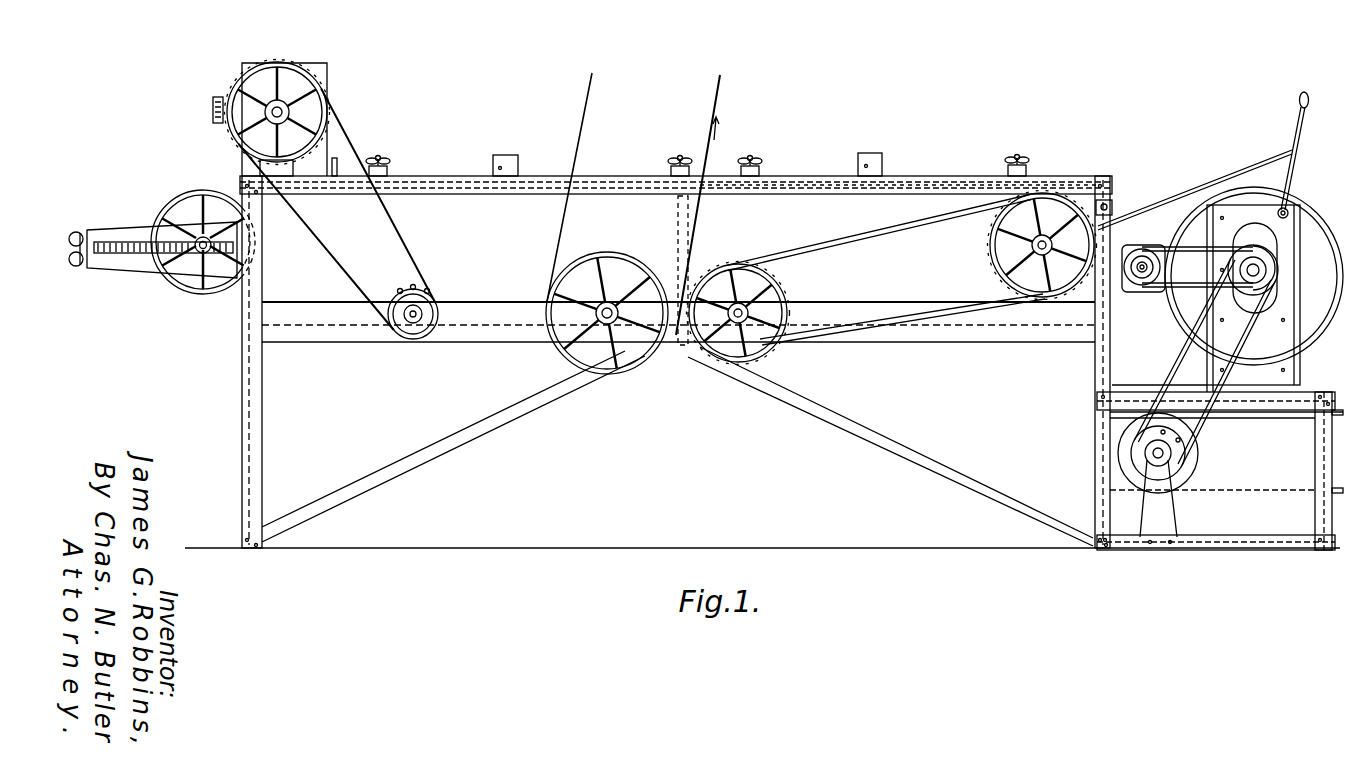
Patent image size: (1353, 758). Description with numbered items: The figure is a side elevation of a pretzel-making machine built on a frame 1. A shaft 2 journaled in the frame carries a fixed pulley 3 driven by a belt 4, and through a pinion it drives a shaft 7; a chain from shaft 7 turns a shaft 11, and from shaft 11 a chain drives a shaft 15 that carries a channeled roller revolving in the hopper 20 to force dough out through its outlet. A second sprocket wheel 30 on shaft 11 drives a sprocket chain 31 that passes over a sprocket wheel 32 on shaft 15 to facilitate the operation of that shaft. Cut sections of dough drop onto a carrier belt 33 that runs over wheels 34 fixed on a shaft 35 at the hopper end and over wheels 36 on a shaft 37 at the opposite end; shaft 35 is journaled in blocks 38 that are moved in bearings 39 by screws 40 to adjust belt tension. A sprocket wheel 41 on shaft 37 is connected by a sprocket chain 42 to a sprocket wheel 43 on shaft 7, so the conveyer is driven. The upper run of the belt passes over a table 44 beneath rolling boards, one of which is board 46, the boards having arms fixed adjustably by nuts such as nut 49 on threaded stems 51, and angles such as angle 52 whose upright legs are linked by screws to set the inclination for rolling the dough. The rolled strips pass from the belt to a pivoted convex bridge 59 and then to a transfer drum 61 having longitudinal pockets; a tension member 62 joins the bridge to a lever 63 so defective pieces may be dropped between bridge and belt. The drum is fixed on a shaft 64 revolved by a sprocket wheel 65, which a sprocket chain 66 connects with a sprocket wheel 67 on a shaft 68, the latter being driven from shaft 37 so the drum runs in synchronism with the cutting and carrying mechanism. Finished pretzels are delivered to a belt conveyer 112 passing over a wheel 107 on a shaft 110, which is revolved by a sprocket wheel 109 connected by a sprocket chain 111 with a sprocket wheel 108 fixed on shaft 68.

The frame 1 is at (262, 372).
The shaft 2 is at (592, 322).
The fixed pulley 3 is at (612, 256).
The belt 4 is at (712, 92).
The shaft 7 is at (775, 302).
The shaft 11 is at (414, 330).
The shaft 15 is at (281, 100).
The hopper 20 is at (294, 107).
The second sprocket wheel 30 is at (400, 295).
The sprocket chain 31 is at (414, 243).
The sprocket wheel 32 is at (320, 107).
The carrier belt 33 is at (494, 301).
The wheels 34 is at (203, 191).
The shaft 35 is at (205, 262).
The wheels 36 is at (1000, 250).
The shaft 37 is at (1112, 203).
The blocks 38 is at (200, 254).
The bearings 39 is at (108, 262).
The screws 40 is at (106, 240).
The sprocket wheel 41 is at (1030, 268).
The sprocket chain 42 is at (880, 250).
The sprocket wheel 43 is at (765, 292).
The table 44 is at (516, 195).
The board 46 is at (940, 186).
The nut 49 is at (387, 165).
The threaded stems 51 is at (379, 158).
The angle 52 is at (512, 156).
The convex bridge 59 is at (1128, 248).
The transfer drum 61 is at (1152, 250).
The tension member 62 is at (1210, 180).
The lever 63 is at (1297, 128).
The shaft 64 is at (1143, 280).
The sprocket wheel 65 is at (1161, 300).
The sprocket chain 66 is at (1160, 288).
The sprocket wheel 67 is at (1248, 250).
The shaft 68 is at (1258, 310).
The wheel 107 is at (1188, 466).
The sprocket wheel 108 is at (1318, 325).
The sprocket wheel 109 is at (1175, 455).
The shaft 110 is at (1190, 480).
The sprocket chain 111 is at (1203, 428).
The belt conveyer 112 is at (1266, 486).